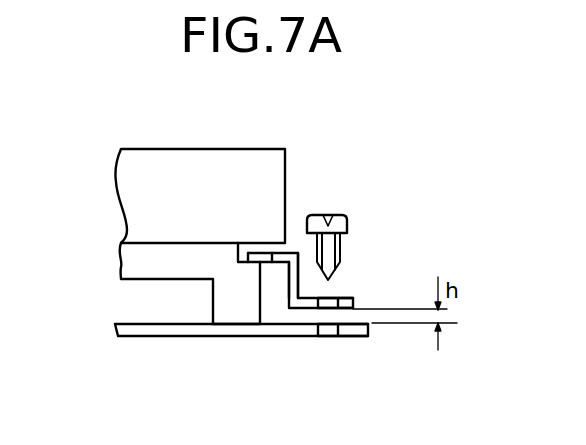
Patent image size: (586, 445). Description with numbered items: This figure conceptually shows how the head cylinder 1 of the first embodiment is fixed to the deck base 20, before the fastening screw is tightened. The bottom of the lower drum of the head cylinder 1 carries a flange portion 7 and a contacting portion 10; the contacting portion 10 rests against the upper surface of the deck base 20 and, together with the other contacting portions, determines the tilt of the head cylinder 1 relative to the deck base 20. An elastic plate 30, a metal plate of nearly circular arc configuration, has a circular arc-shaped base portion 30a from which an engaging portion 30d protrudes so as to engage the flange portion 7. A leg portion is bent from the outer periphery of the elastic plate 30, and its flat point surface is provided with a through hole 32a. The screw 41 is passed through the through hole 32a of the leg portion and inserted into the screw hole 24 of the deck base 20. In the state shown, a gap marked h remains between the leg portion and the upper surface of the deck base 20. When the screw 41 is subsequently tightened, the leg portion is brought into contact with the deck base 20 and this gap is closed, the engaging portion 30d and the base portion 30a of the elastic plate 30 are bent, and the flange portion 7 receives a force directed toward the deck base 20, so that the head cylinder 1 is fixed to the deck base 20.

The head cylinder 1 is at (175, 147).
The flange portion 7 is at (133, 266).
The third contacting portion 10 is at (226, 314).
The deck base 20 is at (137, 333).
The second screw hole 24 is at (318, 330).
The elastic plate 30 is at (290, 293).
The base portion 30a is at (290, 255).
The third engaging portion 30d is at (258, 252).
The through hole 32a is at (340, 298).
The second screw 41 is at (328, 214).